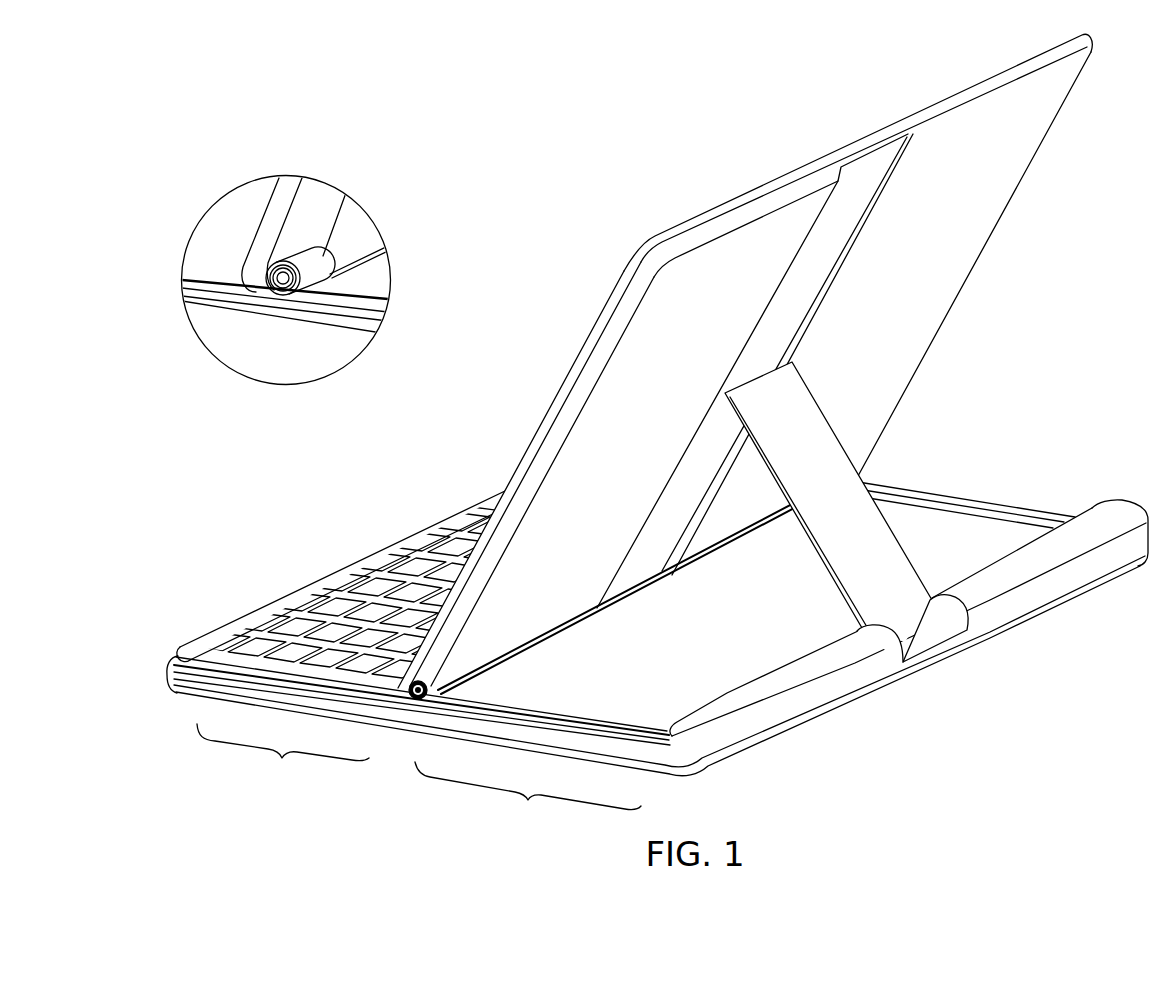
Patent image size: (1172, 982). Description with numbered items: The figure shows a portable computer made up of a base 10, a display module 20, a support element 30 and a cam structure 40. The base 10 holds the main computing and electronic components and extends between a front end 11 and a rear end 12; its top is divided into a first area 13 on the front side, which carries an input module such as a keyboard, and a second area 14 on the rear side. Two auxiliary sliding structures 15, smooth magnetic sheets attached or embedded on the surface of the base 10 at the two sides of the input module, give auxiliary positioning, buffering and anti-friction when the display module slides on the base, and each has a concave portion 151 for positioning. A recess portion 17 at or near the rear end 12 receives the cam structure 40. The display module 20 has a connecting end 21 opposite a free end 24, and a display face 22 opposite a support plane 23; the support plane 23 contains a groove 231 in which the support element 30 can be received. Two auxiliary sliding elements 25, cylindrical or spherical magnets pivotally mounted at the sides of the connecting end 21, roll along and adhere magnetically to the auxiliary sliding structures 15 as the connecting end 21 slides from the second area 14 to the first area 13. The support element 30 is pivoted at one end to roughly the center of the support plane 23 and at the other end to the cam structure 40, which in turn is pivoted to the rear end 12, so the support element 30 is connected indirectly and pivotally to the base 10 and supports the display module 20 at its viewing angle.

The base 10 is at (186, 694).
The front end 11 is at (410, 540).
The rear end 12 is at (803, 714).
The first area 13 is at (283, 756).
The second area 14 is at (528, 793).
The auxiliary sliding structure 15 is at (188, 656).
The concave portion 151 is at (417, 701).
The recess portion 17 is at (932, 598).
The display module 20 is at (1003, 211).
The connecting end 21 is at (538, 645).
The display face 22 is at (560, 381).
The support plane 23 is at (934, 291).
The groove 231 is at (836, 236).
The free end 24 is at (766, 182).
The auxiliary sliding element 25 is at (428, 700).
The support element 30 is at (812, 566).
The cam structure 40 is at (935, 654).